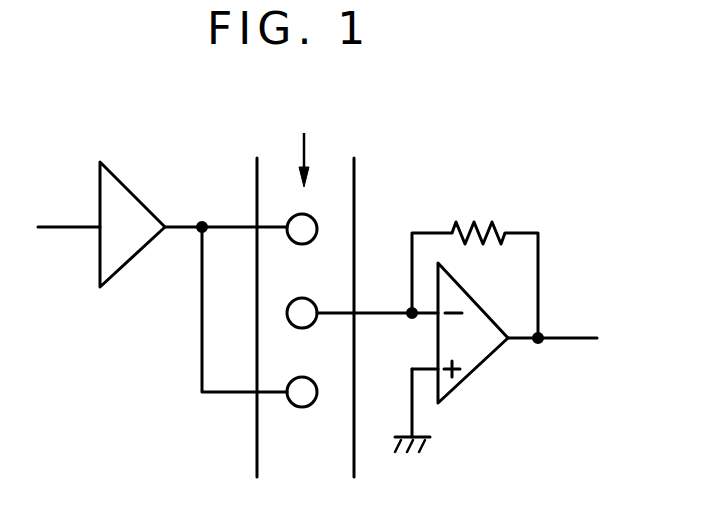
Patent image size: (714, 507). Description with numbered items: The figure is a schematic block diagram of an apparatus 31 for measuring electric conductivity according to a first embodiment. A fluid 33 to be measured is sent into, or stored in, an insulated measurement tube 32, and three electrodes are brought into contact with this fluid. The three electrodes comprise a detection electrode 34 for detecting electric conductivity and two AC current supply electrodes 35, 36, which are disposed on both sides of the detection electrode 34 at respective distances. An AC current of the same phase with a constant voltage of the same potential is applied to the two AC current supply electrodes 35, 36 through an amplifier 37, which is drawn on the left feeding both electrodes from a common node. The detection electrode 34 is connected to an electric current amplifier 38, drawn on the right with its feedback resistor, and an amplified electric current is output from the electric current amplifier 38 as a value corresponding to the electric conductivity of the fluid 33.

The apparatus for measuring electric conductivity 31 is at (320, 157).
The measurement tube 32 is at (255, 176).
The fluid to be measured 33 is at (303, 152).
The detection electrode 34 is at (332, 287).
The AC current supply electrode 35 is at (316, 218).
The AC current supply electrode 36 is at (331, 377).
The amplifier 37 is at (130, 181).
The electric current amplifier 38 is at (489, 221).